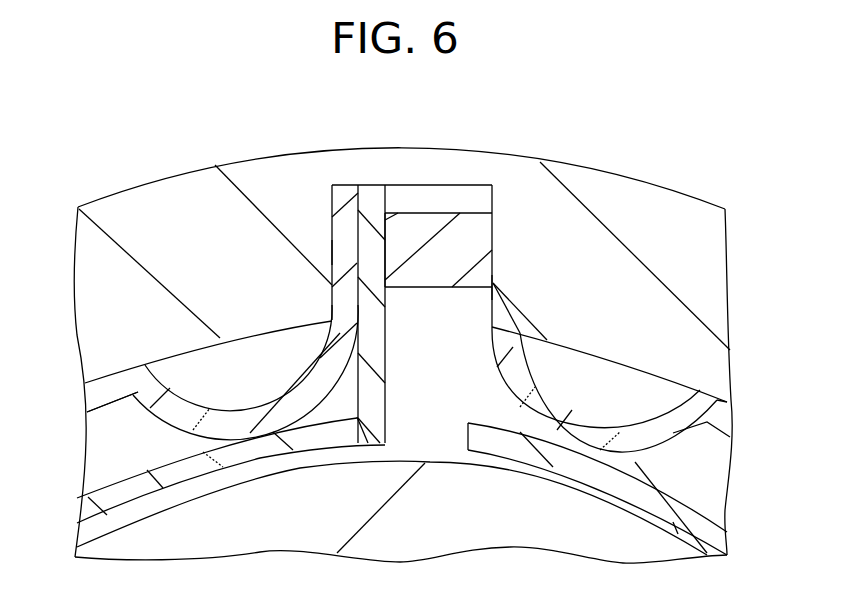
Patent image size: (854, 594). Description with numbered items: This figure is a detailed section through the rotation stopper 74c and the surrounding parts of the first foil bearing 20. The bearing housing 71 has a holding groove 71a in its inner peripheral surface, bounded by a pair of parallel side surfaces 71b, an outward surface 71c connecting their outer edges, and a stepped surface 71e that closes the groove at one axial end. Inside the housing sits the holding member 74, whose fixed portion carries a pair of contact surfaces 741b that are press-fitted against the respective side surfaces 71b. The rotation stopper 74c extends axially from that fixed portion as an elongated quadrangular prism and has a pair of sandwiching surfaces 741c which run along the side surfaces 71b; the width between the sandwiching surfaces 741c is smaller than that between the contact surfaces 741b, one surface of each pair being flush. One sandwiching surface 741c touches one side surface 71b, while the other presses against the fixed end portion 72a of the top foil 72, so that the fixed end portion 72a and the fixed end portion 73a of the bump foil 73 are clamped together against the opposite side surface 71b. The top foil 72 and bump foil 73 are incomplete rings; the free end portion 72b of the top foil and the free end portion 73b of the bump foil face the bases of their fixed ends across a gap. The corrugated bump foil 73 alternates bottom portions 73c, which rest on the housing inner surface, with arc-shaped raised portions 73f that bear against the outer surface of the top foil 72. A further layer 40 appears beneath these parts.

The first foil bearing 20 is at (110, 178).
The substrate 40 is at (680, 517).
The bearing housing 71 is at (643, 195).
The holding groove 71a is at (493, 226).
The side surfaces 71b is at (332, 253).
The outward surface 71c is at (425, 195).
The stepped surface 71e is at (467, 193).
The top foil 72 is at (86, 510).
The fixed end portion 72a is at (372, 196).
The free end portion 72b is at (483, 440).
The bump foil 73 is at (85, 393).
The fixed end portion 73a is at (332, 203).
The free end portion 73b is at (541, 334).
The bottom portions 73c is at (86, 418).
The raised portions 73f is at (233, 425).
The holding member 74 is at (412, 290).
The rotation stopper 74c is at (466, 290).
The contact surfaces 741b is at (465, 280).
The sandwiching surfaces 741c is at (352, 288).